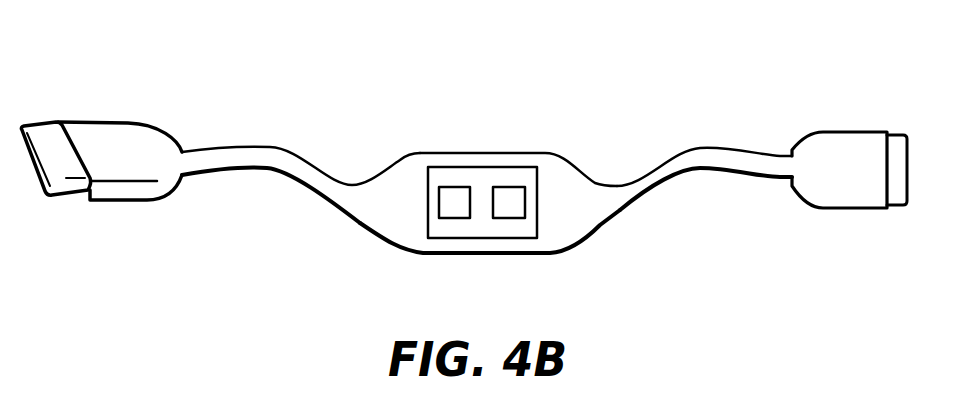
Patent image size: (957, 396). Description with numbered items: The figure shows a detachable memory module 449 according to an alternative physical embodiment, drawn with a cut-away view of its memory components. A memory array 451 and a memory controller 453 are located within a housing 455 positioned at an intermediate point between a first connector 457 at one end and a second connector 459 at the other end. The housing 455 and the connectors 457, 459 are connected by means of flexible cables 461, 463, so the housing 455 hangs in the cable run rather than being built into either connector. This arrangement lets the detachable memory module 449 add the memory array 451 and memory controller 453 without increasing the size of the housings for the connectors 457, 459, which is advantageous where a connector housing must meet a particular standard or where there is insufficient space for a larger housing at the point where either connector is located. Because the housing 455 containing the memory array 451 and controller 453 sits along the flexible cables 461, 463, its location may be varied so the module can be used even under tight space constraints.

The detachable memory module 449 is at (428, 74).
The memory array 451 is at (462, 195).
The memory controller 453 is at (510, 195).
The housing 455 is at (447, 243).
The first connector 457 is at (37, 192).
The second connector 459 is at (908, 182).
The flexible cable 461 is at (270, 145).
The flexible cable 463 is at (697, 148).